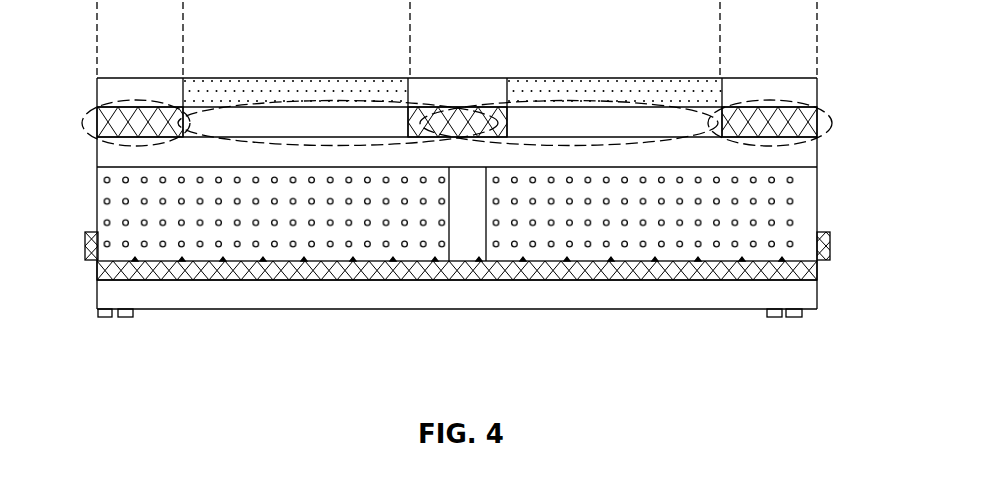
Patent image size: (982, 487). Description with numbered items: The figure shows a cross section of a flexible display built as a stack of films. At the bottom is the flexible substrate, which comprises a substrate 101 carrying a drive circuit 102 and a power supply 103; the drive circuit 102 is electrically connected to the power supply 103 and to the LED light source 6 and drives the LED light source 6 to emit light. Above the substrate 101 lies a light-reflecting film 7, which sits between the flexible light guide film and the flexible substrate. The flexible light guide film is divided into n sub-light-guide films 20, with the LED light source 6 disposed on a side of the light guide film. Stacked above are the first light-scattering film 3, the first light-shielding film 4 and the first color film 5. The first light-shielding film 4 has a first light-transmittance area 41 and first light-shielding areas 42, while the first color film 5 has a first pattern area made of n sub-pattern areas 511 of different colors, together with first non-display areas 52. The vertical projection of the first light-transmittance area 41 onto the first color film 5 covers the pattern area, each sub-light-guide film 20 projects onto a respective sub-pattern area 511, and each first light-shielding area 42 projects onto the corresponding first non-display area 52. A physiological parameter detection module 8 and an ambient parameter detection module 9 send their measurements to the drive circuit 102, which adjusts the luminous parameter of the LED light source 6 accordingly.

The first light-scattering film 3 is at (780, 144).
The first light-shielding film 4 is at (788, 122).
The first color film 5 is at (785, 97).
The first light-transmittance area 41 is at (338, 103).
The first light-shielding area 42 is at (736, 106).
The sub-pattern area 511 is at (720, 41).
The first non-display area 52 is at (817, 41).
The sub-light-guide film 20 is at (97, 213).
The LED light source 6 is at (85, 258).
The light-reflecting film 7 is at (790, 270).
The substrate 101 is at (786, 308).
The drive circuit 102 is at (105, 318).
The power supply 103 is at (126, 318).
The physiological parameter detection module 8 is at (773, 318).
The ambient parameter detection module 9 is at (795, 318).